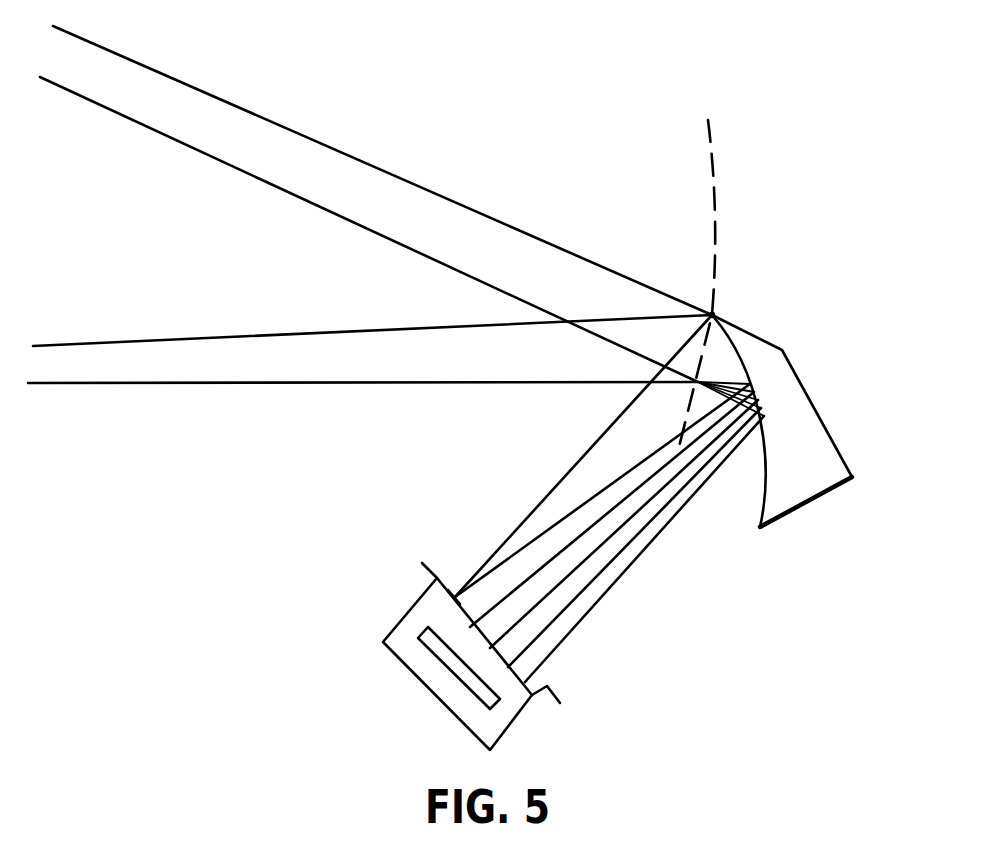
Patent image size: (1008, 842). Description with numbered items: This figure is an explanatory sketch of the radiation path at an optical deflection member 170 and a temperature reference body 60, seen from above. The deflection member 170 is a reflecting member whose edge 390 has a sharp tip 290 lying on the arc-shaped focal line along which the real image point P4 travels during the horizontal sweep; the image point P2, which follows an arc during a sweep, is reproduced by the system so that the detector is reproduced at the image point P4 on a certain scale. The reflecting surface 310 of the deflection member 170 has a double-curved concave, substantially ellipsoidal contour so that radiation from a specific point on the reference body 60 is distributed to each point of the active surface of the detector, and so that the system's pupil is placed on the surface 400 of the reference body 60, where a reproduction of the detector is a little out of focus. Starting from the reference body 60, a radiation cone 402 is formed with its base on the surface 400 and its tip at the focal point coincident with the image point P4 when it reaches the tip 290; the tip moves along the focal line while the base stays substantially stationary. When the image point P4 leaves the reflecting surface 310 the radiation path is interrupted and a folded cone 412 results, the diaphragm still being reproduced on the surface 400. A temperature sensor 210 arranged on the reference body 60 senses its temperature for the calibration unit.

The image point P2 is at (718, 192).
The sharp tip 290 is at (712, 315).
The edge 390 is at (746, 340).
The real image point P4 is at (702, 380).
The optical deflection member 170 is at (794, 446).
The cone 402 is at (643, 453).
The folded cone 412 is at (648, 526).
The area of the reference body 400 is at (452, 586).
The reflecting surface 310 is at (760, 510).
The reference body 60 is at (527, 682).
The temperature sensor 210 is at (467, 712).